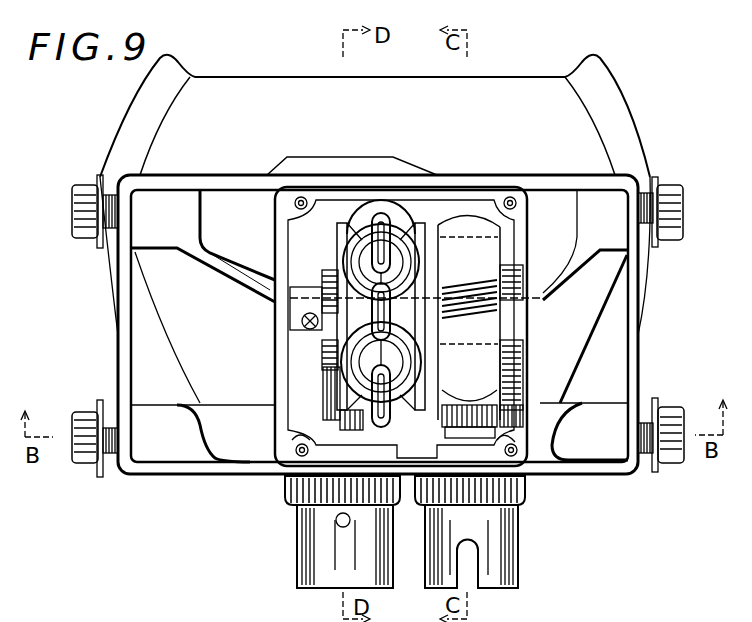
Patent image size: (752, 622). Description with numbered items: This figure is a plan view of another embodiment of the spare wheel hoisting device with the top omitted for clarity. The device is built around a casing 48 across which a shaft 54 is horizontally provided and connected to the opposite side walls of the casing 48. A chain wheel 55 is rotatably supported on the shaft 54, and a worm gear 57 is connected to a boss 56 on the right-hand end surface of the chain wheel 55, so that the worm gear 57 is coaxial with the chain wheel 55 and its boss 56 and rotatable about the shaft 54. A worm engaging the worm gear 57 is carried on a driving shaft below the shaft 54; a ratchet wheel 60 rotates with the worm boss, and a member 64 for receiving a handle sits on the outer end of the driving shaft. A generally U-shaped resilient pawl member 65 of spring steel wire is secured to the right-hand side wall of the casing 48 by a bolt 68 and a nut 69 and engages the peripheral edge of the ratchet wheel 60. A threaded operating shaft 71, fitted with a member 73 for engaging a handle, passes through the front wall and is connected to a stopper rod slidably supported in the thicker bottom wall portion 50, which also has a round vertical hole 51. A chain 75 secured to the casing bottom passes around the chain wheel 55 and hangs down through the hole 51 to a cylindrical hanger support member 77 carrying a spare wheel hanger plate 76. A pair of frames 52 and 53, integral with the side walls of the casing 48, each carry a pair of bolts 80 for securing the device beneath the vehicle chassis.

The casing 48 is at (296, 166).
The thicker bottom wall portion 50 is at (338, 203).
The round vertical hole 51 is at (376, 212).
The mounting frame 52 is at (125, 343).
The mounting frame 53 is at (634, 284).
The shaft 54 is at (262, 265).
The chain wheel 55 is at (292, 214).
The boss 56 is at (432, 262).
The worm gear 57 is at (481, 226).
The ratchet wheel 60 is at (522, 472).
The member for receiving a handle 64 is at (502, 588).
The resilient pawl member 65 is at (508, 395).
The bolt 68 is at (552, 410).
The nut 69 is at (528, 404).
The threaded operating shaft 71 is at (345, 385).
The member for engaging a handle 73 is at (300, 562).
The chain 75 is at (296, 462).
The spare wheel hanger plate 76 is at (431, 77).
The hanger support member 77 is at (391, 225).
The bolts 80 is at (76, 198).